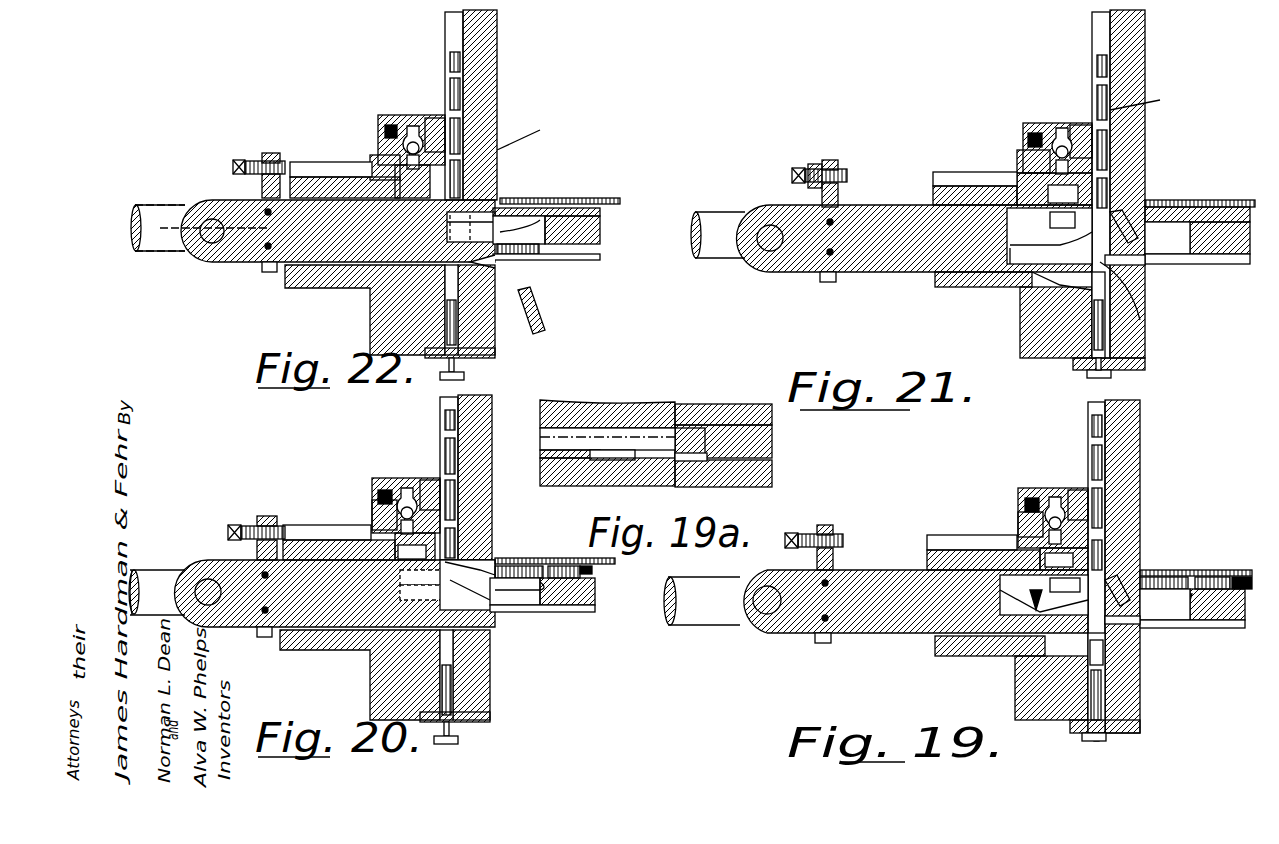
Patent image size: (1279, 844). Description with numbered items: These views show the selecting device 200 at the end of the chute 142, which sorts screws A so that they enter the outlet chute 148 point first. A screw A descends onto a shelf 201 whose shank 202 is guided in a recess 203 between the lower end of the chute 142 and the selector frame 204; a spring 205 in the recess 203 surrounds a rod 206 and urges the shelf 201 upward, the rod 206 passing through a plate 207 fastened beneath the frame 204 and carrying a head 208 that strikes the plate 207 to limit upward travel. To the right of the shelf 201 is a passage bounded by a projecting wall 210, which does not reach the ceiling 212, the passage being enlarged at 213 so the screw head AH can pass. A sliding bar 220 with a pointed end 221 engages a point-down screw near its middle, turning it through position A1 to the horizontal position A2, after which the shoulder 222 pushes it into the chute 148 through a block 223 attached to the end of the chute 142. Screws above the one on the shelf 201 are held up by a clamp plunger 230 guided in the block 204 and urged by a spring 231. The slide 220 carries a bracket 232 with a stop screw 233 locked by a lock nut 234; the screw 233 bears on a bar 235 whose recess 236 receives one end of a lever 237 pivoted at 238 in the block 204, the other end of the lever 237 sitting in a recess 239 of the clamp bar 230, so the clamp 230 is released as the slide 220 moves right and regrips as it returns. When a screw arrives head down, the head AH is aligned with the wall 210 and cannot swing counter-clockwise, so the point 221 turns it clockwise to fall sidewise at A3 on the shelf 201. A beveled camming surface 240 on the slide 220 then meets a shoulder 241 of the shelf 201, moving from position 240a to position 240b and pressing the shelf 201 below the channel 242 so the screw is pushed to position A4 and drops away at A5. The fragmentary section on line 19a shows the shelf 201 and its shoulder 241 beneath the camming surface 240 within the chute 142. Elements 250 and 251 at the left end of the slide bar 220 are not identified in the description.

In FIG. 22, the chute 142 is at (488, 31).
In FIG. 21, the chute 142 is at (1135, 82).
In FIG. 19A, the chute 142 is at (745, 487).
In FIG. 20, the chute 142 is at (480, 425).
In FIG. 19, the chute 142 is at (1135, 465).
In FIG. 22, the outlet chute 148 is at (585, 198).
In FIG. 21, the outlet chute 148 is at (1235, 200).
In FIG. 20, the outlet chute 148 is at (600, 564).
In FIG. 19, the outlet chute 148 is at (1190, 570).
In FIG. 22, the selecting device 200 is at (572, 128).
In FIG. 21, the selecting device 200 is at (1015, 381).
In FIG. 20, the selecting device 200 is at (527, 465).
In FIG. 19, the selecting device 200 is at (1030, 652).
In FIG. 22, the shelf 201 is at (497, 265).
In FIG. 21, the shelf 201 is at (1130, 265).
In FIG. 19A, the shelf 201 is at (765, 442).
In FIG. 20, the shelf 201 is at (480, 628).
In FIG. 19, the shelf 201 is at (1120, 624).
In FIG. 22, the shank 202 is at (455, 300).
In FIG. 21, the shank 202 is at (1105, 335).
In FIG. 20, the shank 202 is at (453, 660).
In FIG. 19, the shank 202 is at (1105, 680).
In FIG. 19, the recess 203 is at (1103, 690).
In FIG. 22, the selector frame 204 is at (370, 318).
In FIG. 21, the selector frame 204 is at (1055, 358).
In FIG. 19A, the selector frame 204 is at (610, 470).
In FIG. 20, the selector frame 204 is at (372, 520).
In FIG. 19, the selector frame 204 is at (1055, 700).
In FIG. 22, the spring 205 is at (456, 335).
In FIG. 21, the spring 205 is at (1103, 345).
In FIG. 20, the spring 205 is at (451, 690).
In FIG. 19, the spring 205 is at (1092, 700).
In FIG. 22, the rod 206 is at (454, 365).
In FIG. 21, the rod 206 is at (1100, 378).
In FIG. 20, the rod 206 is at (449, 730).
In FIG. 19, the rod 206 is at (1096, 741).
In FIG. 22, the plate 207 is at (495, 353).
In FIG. 21, the plate 207 is at (1140, 365).
In FIG. 20, the plate 207 is at (490, 717).
In FIG. 19, the plate 207 is at (1130, 728).
In FIG. 22, the head 208 is at (464, 378).
In FIG. 21, the head 208 is at (1095, 378).
In FIG. 20, the head 208 is at (452, 744).
In FIG. 19, the head 208 is at (1106, 740).
In FIG. 22, the projecting wall 210 is at (548, 197).
In FIG. 21, the projecting wall 210 is at (1150, 210).
In FIG. 20, the projecting wall 210 is at (425, 603).
In FIG. 19, the projecting wall 210 is at (1140, 575).
In FIG. 22, the ceiling 212 is at (497, 188).
In FIG. 21, the ceiling 212 is at (1145, 180).
In FIG. 20, the ceiling 212 is at (492, 505).
In FIG. 19, the ceiling 212 is at (1140, 535).
In FIG. 22, the enlarged portion of passage 213 is at (470, 185).
In FIG. 21, the enlarged portion of passage 213 is at (1130, 215).
In FIG. 20, the enlarged portion of passage 213 is at (425, 582).
In FIG. 19, the enlarged portion of passage 213 is at (1120, 575).
In FIG. 22, the sliding bar 220 is at (245, 262).
In FIG. 21, the sliding bar 220 is at (880, 262).
In FIG. 19A, the sliding bar 220 is at (575, 410).
In FIG. 20, the sliding bar 220 is at (228, 625).
In FIG. 19, the sliding bar 220 is at (885, 625).
In FIG. 22, the pointed end 221 is at (600, 214).
In FIG. 21, the pointed end 221 is at (1075, 234).
In FIG. 20, the pointed end 221 is at (530, 590).
In FIG. 19, the pointed end 221 is at (1080, 605).
In FIG. 22, the shoulder 222 is at (447, 228).
In FIG. 21, the shoulder 222 is at (1052, 220).
In FIG. 20, the shoulder 222 is at (480, 570).
In FIG. 19, the shoulder 222 is at (1047, 585).
In FIG. 22, the block 223 is at (600, 230).
In FIG. 21, the block 223 is at (1245, 250).
In FIG. 20, the block 223 is at (565, 605).
In FIG. 19, the block 223 is at (1225, 620).
In FIG. 22, the plunger 230 is at (432, 118).
In FIG. 21, the plunger 230 is at (1075, 125).
In FIG. 20, the plunger 230 is at (428, 480).
In FIG. 19, the plunger 230 is at (1075, 490).
In FIG. 22, the spring 231 is at (388, 116).
In FIG. 21, the spring 231 is at (1035, 123).
In FIG. 20, the spring 231 is at (385, 478).
In FIG. 19, the spring 231 is at (1035, 488).
In FIG. 22, the bracket 232 is at (262, 188).
In FIG. 21, the bracket 232 is at (838, 192).
In FIG. 20, the bracket 232 is at (257, 550).
In FIG. 19, the bracket 232 is at (833, 560).
In FIG. 22, the stop screw 233 is at (280, 160).
In FIG. 21, the stop screw 233 is at (838, 168).
In FIG. 20, the stop screw 233 is at (277, 523).
In FIG. 19, the stop screw 233 is at (833, 533).
In FIG. 22, the lock nut 234 is at (255, 160).
In FIG. 21, the lock nut 234 is at (815, 168).
In FIG. 20, the lock nut 234 is at (250, 525).
In FIG. 19, the lock nut 234 is at (808, 533).
In FIG. 22, the bar 235 is at (322, 162).
In FIG. 21, the bar 235 is at (940, 172).
In FIG. 20, the bar 235 is at (320, 525).
In FIG. 19, the bar 235 is at (945, 535).
In FIG. 22, the recess 236 is at (412, 181).
In FIG. 21, the recess 236 is at (1054, 189).
In FIG. 20, the recess 236 is at (415, 546).
In FIG. 19, the recess 236 is at (1064, 559).
In FIG. 22, the lever 237 is at (370, 165).
In FIG. 21, the lever 237 is at (1017, 160).
In FIG. 20, the lever 237 is at (372, 512).
In FIG. 19, the lever 237 is at (1018, 525).
In FIG. 22, the pivot 238 is at (385, 132).
In FIG. 21, the pivot 238 is at (1028, 140).
In FIG. 20, the pivot 238 is at (398, 488).
In FIG. 19, the pivot 238 is at (1025, 515).
In FIG. 22, the recess 239 is at (410, 127).
In FIG. 21, the recess 239 is at (1058, 128).
In FIG. 20, the recess 239 is at (403, 488).
In FIG. 19, the recess 239 is at (1050, 497).
In FIG. 21, the beveled camming surface 240 is at (975, 287).
In FIG. 19A, the beveled camming surface 240 is at (608, 450).
In FIG. 21, the camming surface position 240a is at (1035, 290).
In FIG. 22, the camming surface position 240b is at (497, 262).
In FIG. 21, the shoulder 241 is at (1140, 320).
In FIG. 19A, the shoulder 241 is at (690, 461).
In FIG. 22, the channel 242 is at (600, 252).
In FIG. 21, the channel 242 is at (1180, 264).
In FIG. 22, the pivot pin 250 is at (208, 240).
In FIG. 21, the pivot pin 250 is at (765, 250).
In FIG. 20, the pivot pin 250 is at (200, 580).
In FIG. 19, the pivot pin 250 is at (765, 612).
In FIG. 22, the rod 251 is at (150, 245).
In FIG. 21, the rod 251 is at (712, 252).
In FIG. 20, the rod 251 is at (140, 580).
In FIG. 19, the rod 251 is at (698, 615).
In FIG. 22, the screw A is at (461, 74).
In FIG. 21, the screw A is at (1135, 205).
In FIG. 19, the screw A is at (1125, 580).
In FIG. 19, the screw position A1 is at (1143, 555).
In FIG. 20, the horizontal screw position A2 is at (495, 550).
In FIG. 21, the screw position A3 is at (1140, 213).
In FIG. 22, the screw position A4 is at (560, 250).
In FIG. 22, the screw position A5 is at (545, 315).
In FIG. 21, the screw head AH is at (1167, 238).
In FIG. 19, the section line 19a— 19a is at (1028, 598).